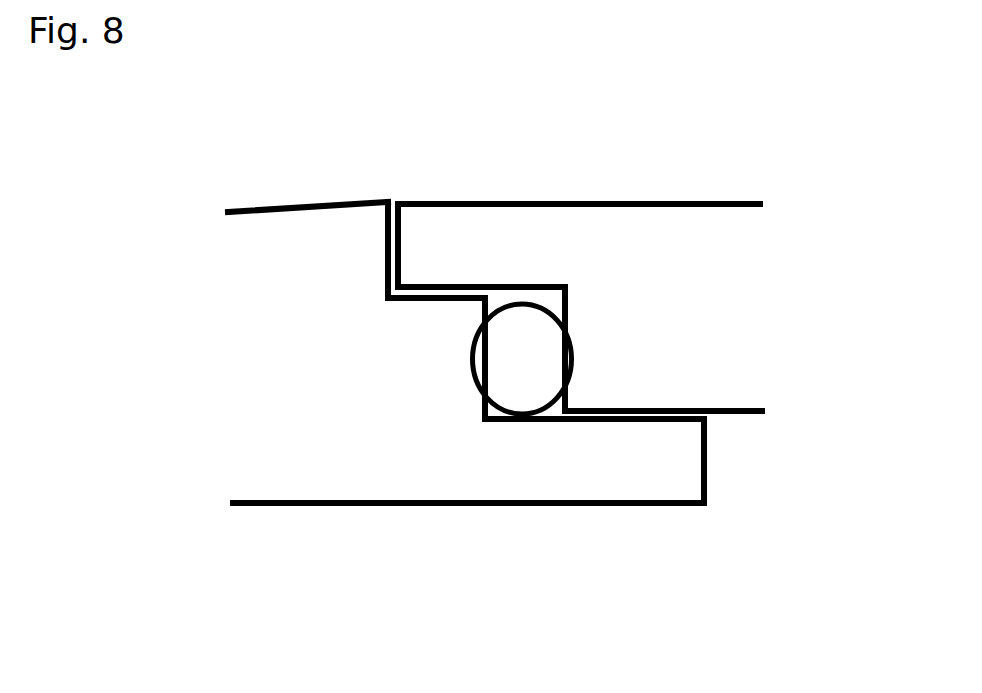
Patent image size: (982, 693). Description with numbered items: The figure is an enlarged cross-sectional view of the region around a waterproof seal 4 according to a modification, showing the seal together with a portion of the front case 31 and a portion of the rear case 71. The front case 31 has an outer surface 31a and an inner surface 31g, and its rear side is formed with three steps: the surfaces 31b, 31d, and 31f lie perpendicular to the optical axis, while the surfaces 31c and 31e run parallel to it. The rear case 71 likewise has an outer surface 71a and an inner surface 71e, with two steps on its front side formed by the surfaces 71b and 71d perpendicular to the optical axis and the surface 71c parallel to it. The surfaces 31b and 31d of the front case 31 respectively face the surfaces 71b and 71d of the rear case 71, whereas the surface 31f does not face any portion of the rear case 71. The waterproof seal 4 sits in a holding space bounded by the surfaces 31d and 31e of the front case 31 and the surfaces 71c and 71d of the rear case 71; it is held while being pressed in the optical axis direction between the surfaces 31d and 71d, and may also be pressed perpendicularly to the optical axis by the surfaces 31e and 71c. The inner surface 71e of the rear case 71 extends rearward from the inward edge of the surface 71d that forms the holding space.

The waterproof seal 4 is at (517, 358).
The front case 31 is at (257, 263).
The outer surface 31a is at (297, 200).
The surface 31b is at (387, 247).
The surface 31c is at (427, 303).
The surface 31d is at (478, 407).
The surface 31e is at (552, 423).
The surface 31f is at (702, 468).
The inner surface 31g is at (335, 507).
The rear case 71 is at (740, 267).
The outer surface 71a is at (590, 200).
The surface 71b is at (400, 232).
The surface 71c is at (513, 287).
The surface 71d is at (567, 308).
The inner surface 71e is at (735, 415).